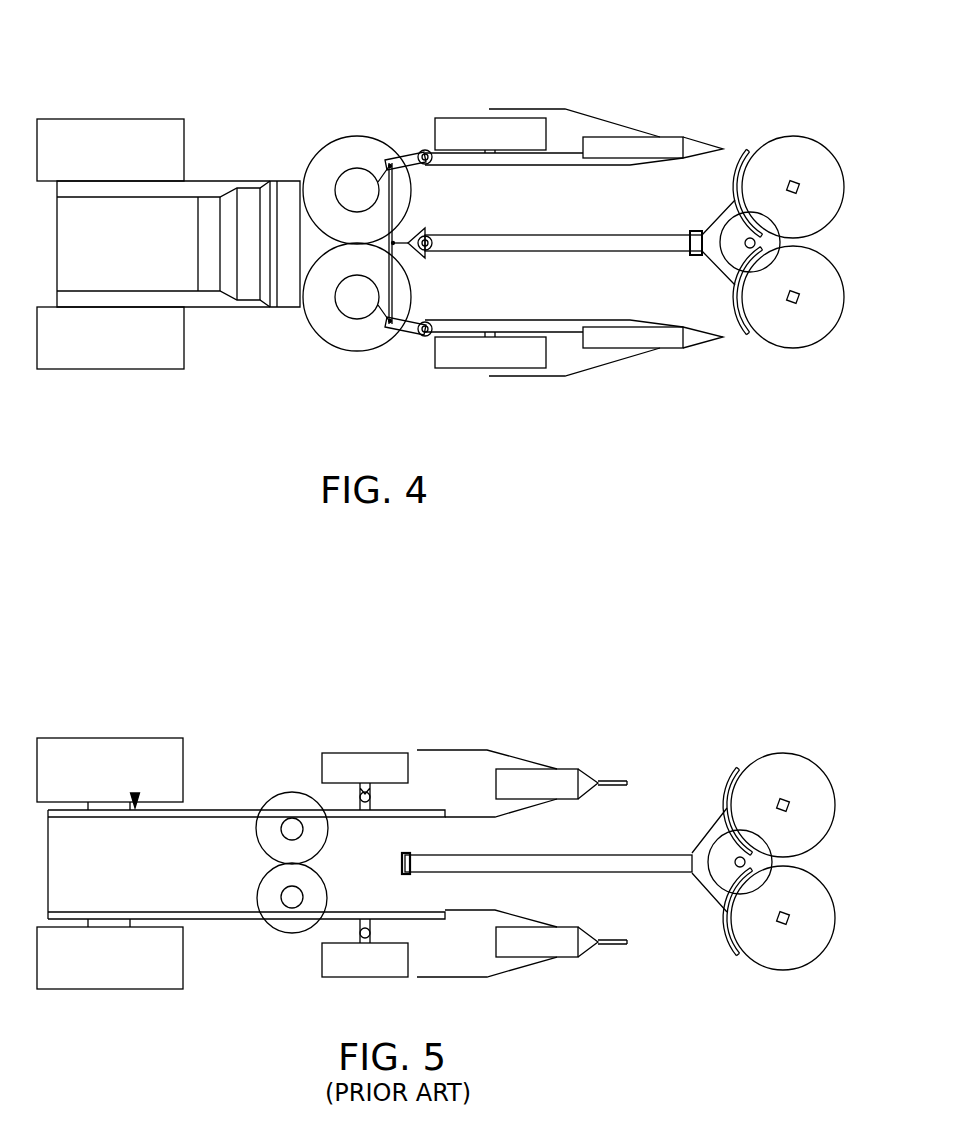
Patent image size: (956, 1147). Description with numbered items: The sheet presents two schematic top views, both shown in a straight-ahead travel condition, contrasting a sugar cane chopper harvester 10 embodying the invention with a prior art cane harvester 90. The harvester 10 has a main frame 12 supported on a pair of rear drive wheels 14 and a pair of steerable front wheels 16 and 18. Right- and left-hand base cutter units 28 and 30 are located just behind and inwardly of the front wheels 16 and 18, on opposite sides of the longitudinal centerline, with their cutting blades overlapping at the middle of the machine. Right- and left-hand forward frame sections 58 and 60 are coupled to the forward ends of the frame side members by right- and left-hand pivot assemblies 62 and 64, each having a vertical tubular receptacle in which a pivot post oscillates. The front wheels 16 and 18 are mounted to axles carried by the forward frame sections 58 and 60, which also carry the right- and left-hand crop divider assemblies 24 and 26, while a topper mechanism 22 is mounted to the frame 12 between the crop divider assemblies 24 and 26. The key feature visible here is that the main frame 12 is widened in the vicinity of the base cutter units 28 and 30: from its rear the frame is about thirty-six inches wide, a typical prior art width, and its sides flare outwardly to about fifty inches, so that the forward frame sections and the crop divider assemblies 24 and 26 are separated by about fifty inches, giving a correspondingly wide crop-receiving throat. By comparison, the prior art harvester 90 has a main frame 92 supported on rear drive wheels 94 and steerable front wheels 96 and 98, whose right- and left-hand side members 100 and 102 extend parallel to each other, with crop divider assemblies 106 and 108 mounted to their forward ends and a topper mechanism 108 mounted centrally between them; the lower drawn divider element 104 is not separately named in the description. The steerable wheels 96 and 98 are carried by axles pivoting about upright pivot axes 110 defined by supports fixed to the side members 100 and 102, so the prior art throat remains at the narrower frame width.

In FIG. 4, the sugar cane chopper harvester 10 is at (287, 112).
In FIG. 4, the main frame 12 is at (260, 322).
In FIG. 4, the rear drive wheels 14 is at (111, 118).
In FIG. 4, the right-hand steerable front wheel 16 is at (475, 368).
In FIG. 4, the left-hand steerable front wheel 18 is at (462, 117).
In FIG. 4, the topper mechanism 22 is at (658, 220).
In FIG. 4, the right-hand crop divider assembly 24 is at (690, 355).
In FIG. 4, the left-hand crop divider assembly 26 is at (703, 147).
In FIG. 4, the right-hand base cutter unit 28 is at (318, 342).
In FIG. 5, the right-hand base cutter unit 28 is at (257, 890).
In FIG. 4, the left-hand base cutter unit 30 is at (373, 135).
In FIG. 5, the left-hand base cutter unit 30 is at (257, 833).
In FIG. 4, the right-hand forward frame section 58 is at (542, 306).
In FIG. 4, the left-hand forward frame section 60 is at (532, 180).
In FIG. 4, the right-hand pivot assembly 62 is at (419, 353).
In FIG. 4, the left-hand pivot assembly 64 is at (418, 128).
In FIG. 5, the prior art cane harvester 90 is at (358, 710).
In FIG. 5, the main frame 92 is at (230, 808).
In FIG. 5, the rear drive wheels 94 is at (108, 737).
In FIG. 5, the steerable front wheel 96 is at (348, 978).
In FIG. 5, the steerable front wheel 98 is at (325, 752).
In FIG. 5, the right-hand side member 100 is at (385, 910).
In FIG. 5, the left-hand side member 102 is at (395, 818).
In FIG. 5, the lower sweep 104 is at (555, 957).
In FIG. 5, the crop divider assembly 106 is at (563, 767).
In FIG. 5, the crop divider assembly 108 is at (373, 795).
In FIG. 5, the upright pivot axes 110 is at (640, 842).